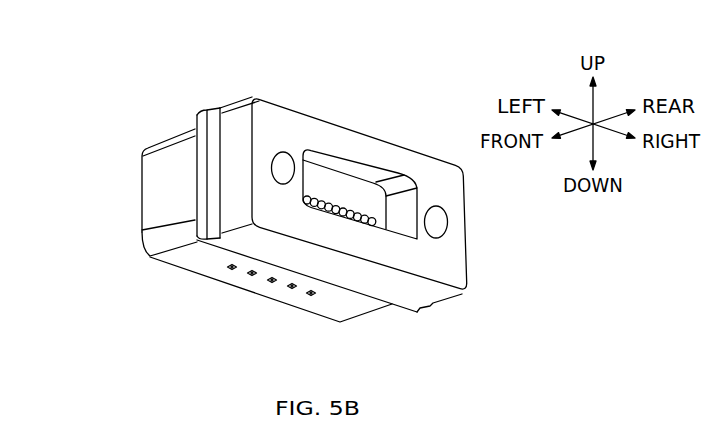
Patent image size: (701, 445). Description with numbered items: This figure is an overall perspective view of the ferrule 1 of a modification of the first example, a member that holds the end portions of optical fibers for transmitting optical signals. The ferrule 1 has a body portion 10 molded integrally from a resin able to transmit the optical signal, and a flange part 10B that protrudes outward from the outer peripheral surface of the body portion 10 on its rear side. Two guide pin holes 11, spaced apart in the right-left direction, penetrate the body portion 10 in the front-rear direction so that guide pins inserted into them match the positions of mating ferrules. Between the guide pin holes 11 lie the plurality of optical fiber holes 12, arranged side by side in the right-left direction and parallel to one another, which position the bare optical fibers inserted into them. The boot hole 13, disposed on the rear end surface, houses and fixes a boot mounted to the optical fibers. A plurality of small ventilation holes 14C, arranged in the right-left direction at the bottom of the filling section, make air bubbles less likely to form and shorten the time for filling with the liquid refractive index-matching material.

The ferrule 1 is at (379, 82).
The body portion 10 is at (168, 165).
The flange part 10B is at (198, 114).
The guide pin holes 11 is at (283, 172).
The optical fiber holes 12 is at (343, 208).
The boot hole 13 is at (403, 236).
The ventilation holes 14C is at (252, 276).